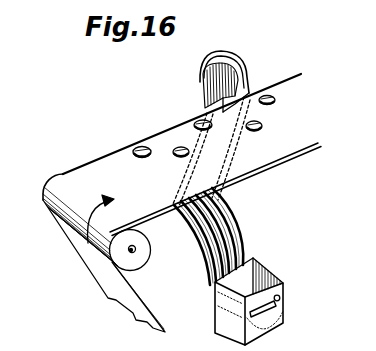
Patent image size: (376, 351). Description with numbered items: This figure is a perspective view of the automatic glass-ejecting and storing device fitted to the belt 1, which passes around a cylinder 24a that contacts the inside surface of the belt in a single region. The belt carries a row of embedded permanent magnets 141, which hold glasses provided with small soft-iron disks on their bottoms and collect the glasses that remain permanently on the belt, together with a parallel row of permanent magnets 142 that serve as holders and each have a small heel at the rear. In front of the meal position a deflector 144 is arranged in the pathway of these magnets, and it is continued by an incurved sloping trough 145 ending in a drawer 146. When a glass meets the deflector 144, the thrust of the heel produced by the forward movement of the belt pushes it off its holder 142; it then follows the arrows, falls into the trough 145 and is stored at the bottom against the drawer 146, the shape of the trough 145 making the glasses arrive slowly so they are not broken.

The sheet plate guided around roller 1 is at (103, 177).
The cylinder 24a is at (137, 260).
The permanent magnets 141 is at (256, 128).
The permanent magnets 142 is at (148, 147).
The deflector 144 is at (241, 81).
The incurved sloping trough 145 is at (218, 238).
The drawer 146 is at (278, 296).